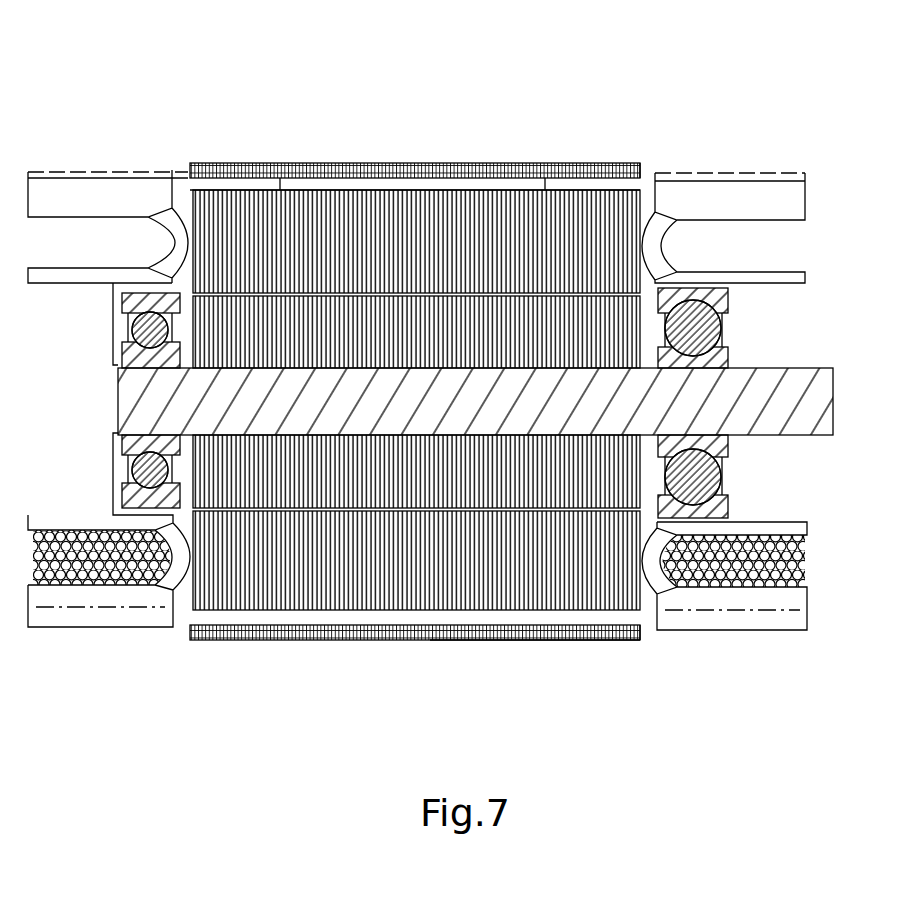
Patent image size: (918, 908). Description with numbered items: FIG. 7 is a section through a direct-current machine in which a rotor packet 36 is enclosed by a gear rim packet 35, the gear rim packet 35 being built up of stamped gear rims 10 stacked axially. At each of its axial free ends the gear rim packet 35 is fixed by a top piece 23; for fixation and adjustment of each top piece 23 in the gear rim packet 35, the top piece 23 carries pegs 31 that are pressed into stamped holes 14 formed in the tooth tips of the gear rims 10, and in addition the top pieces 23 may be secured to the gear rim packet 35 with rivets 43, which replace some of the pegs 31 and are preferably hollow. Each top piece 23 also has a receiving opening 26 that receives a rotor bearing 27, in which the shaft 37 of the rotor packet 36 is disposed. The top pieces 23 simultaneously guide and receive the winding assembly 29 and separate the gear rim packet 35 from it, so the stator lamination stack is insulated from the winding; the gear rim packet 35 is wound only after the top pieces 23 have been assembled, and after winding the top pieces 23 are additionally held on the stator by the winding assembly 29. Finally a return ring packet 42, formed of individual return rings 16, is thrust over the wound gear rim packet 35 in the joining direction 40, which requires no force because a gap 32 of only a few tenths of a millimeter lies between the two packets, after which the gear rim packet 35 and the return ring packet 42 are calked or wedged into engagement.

The gear rim 10 is at (404, 600).
The stamped holes 14 is at (495, 190).
The return rings 16 is at (247, 638).
The top piece 23 is at (92, 197).
The receiving opening 26 is at (763, 520).
The rotor bearing 27 is at (715, 303).
The winding assembly 29 is at (767, 560).
The pegs 31 is at (587, 190).
The gap 32 is at (573, 640).
The gear rim packet 35 is at (428, 222).
The rotor packet 36 is at (307, 338).
The shaft 37 is at (790, 397).
The joining direction 40 is at (652, 167).
The return ring packet 42 is at (248, 167).
The rivets 43 is at (490, 640).